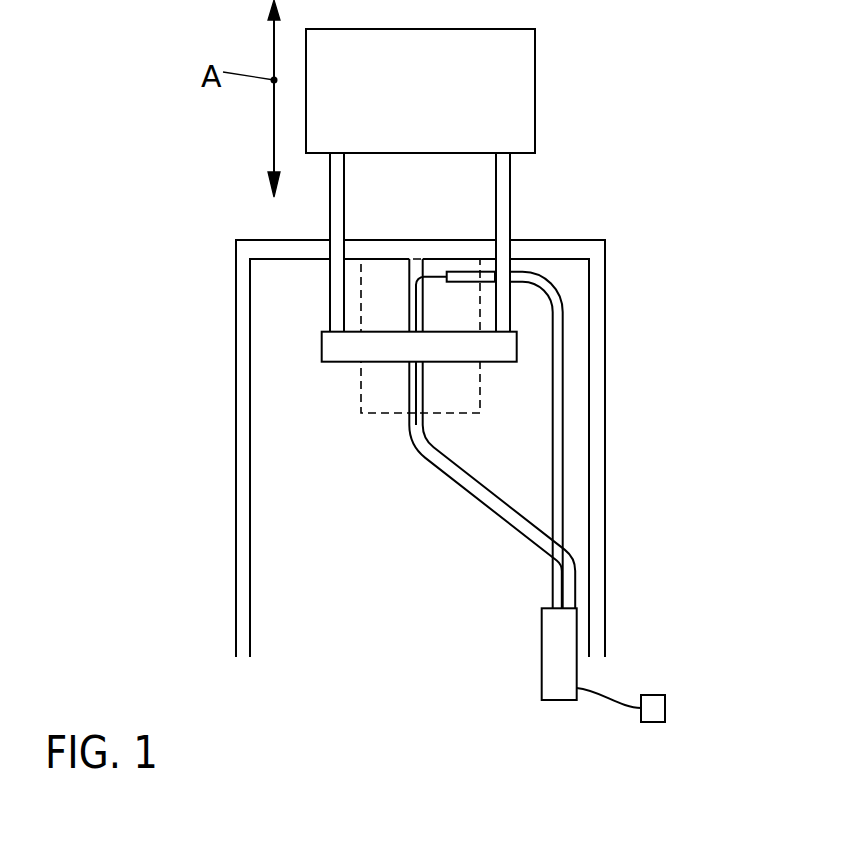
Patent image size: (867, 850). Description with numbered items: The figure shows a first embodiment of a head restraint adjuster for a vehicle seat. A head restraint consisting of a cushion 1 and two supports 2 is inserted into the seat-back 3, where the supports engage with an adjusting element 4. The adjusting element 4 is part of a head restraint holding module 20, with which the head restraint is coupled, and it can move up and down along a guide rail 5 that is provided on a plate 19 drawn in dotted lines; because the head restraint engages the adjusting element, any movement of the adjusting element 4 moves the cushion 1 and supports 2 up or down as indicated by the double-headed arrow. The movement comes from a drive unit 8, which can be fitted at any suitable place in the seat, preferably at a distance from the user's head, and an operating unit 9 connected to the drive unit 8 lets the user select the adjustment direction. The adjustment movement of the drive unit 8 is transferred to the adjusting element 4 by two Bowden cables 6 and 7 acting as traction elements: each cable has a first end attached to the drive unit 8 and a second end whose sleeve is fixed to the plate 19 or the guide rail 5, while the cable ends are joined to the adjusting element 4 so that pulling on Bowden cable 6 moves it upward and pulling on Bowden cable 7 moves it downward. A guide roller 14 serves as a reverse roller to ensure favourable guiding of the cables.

The cushion 1 is at (520, 97).
The supports 2 is at (336, 203).
The seat-back 3 is at (598, 336).
The adjusting element 4 is at (328, 354).
The guide rail 5 is at (422, 373).
The Bowden cable 6 is at (555, 420).
The Bowden cable 7 is at (463, 489).
The drive unit 8 is at (552, 657).
The operating unit 9 is at (655, 705).
The guide roller 14 is at (419, 283).
The plate 19 is at (371, 414).
The head restraint holding module 20 is at (290, 315).